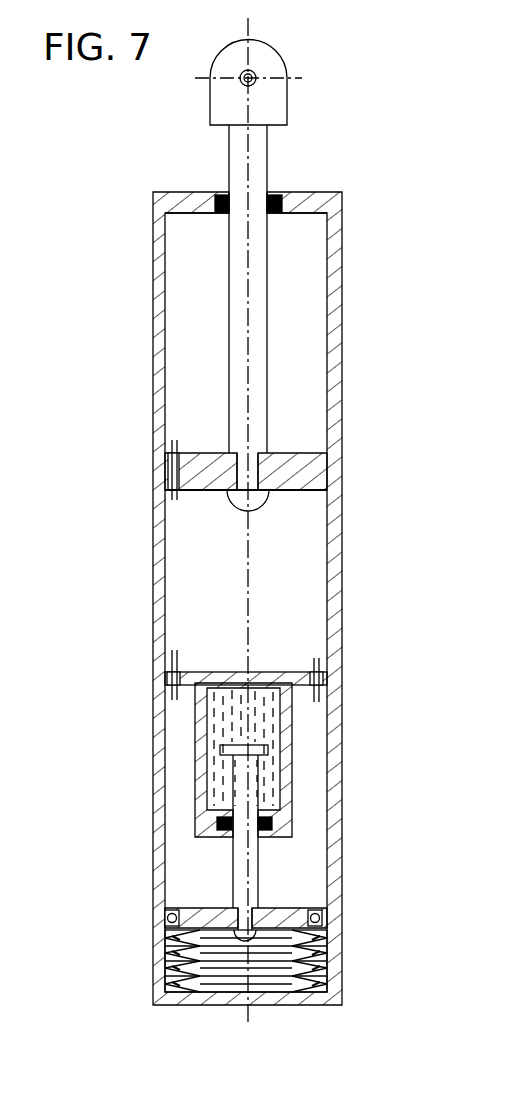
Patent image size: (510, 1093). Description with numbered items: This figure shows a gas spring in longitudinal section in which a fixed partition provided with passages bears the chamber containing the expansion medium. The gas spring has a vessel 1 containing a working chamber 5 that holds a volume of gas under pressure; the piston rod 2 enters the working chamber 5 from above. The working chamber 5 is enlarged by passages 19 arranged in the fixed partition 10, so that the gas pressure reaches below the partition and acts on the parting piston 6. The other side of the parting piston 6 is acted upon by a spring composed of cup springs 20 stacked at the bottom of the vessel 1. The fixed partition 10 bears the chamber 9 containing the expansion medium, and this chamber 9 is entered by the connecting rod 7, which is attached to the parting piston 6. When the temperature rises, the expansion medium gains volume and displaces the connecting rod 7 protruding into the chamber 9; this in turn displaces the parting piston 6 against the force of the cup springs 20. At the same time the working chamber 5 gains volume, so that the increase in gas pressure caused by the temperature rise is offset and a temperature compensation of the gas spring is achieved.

The vessel 1 is at (160, 412).
The piston rod 2 is at (260, 283).
The working chamber 5 is at (295, 546).
The parting piston 6 is at (193, 912).
The connecting rod 7 is at (253, 865).
The chamber containing the expansion medium 9 is at (223, 718).
The fixed partition 10 is at (170, 660).
The passages 19 is at (327, 678).
The cup springs 20 is at (303, 993).